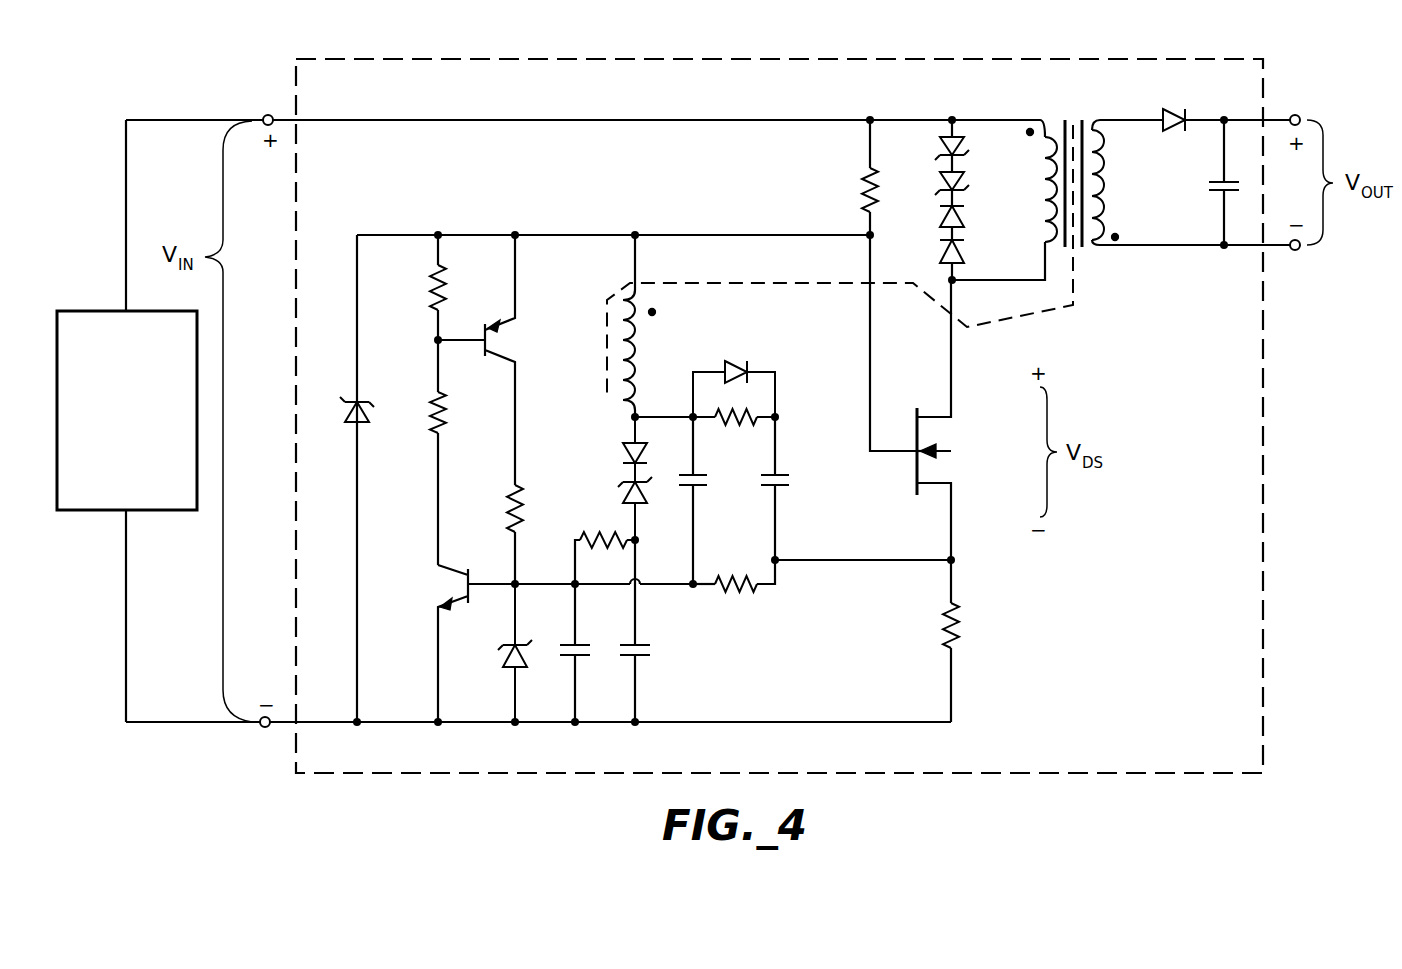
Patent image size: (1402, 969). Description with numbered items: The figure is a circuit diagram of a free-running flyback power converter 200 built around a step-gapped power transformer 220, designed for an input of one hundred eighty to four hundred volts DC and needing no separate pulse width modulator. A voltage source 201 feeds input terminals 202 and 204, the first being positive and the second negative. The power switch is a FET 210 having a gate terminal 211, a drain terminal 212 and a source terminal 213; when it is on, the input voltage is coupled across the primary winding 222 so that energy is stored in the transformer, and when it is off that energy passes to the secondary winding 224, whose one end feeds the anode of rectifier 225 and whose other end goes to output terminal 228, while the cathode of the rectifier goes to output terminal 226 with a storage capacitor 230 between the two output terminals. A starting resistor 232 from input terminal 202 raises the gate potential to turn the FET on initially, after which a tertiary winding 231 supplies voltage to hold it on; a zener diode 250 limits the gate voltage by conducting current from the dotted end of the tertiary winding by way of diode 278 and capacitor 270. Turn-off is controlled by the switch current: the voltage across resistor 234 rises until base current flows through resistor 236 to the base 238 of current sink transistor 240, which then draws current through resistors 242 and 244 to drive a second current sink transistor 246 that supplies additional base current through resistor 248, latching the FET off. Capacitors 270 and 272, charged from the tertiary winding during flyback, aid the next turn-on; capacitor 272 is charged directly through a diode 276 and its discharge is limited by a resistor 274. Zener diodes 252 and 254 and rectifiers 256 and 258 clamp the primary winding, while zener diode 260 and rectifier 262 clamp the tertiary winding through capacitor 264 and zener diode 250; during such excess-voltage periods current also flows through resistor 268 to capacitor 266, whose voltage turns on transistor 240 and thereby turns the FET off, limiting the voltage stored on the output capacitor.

The flyback power converter 200 is at (468, 770).
The voltage source 201 is at (132, 512).
The input terminal 202 is at (263, 115).
The input terminal 204 is at (265, 728).
The FET 210 is at (915, 425).
The gate terminal 211 is at (915, 483).
The drain terminal 212 is at (953, 412).
The source terminal 213 is at (953, 485).
The power transformer 220 is at (1083, 260).
The primary winding 222 is at (1043, 182).
The secondary winding 224 is at (1107, 190).
The rectifier 225 is at (1176, 130).
The output terminal 226 is at (1300, 115).
The output terminal 228 is at (1300, 252).
The storage capacitor 230 is at (1222, 192).
The tertiary winding 231 is at (642, 350).
The starting resistor 232 is at (866, 190).
The resistor 234 is at (960, 630).
The resistor 236 is at (752, 598).
The base 238 is at (502, 600).
The current sink transistor 240 is at (470, 580).
The resistor 242 is at (436, 287).
The resistor 244 is at (440, 425).
The second current sink transistor 246 is at (492, 334).
The resistor 248 is at (506, 492).
The zener diode 250 is at (362, 415).
The zener diode 252 is at (947, 150).
The zener diode 254 is at (947, 185).
The rectifier 256 is at (962, 215).
The rectifier 258 is at (962, 250).
The zener diode 260 is at (625, 493).
The rectifier 262 is at (625, 452).
The capacitor 264 is at (641, 645).
The capacitor 266 is at (572, 644).
The resistor 268 is at (607, 537).
The capacitor 270 is at (697, 490).
The capacitor 272 is at (780, 490).
The resistor 274 is at (713, 422).
The diode 276 is at (740, 365).
The diode 278 is at (505, 656).